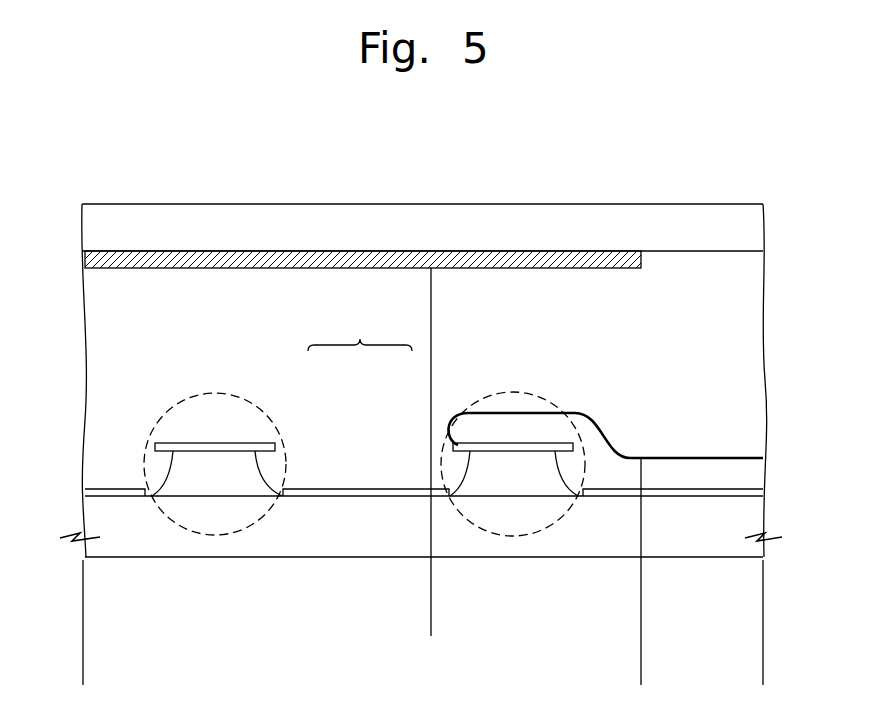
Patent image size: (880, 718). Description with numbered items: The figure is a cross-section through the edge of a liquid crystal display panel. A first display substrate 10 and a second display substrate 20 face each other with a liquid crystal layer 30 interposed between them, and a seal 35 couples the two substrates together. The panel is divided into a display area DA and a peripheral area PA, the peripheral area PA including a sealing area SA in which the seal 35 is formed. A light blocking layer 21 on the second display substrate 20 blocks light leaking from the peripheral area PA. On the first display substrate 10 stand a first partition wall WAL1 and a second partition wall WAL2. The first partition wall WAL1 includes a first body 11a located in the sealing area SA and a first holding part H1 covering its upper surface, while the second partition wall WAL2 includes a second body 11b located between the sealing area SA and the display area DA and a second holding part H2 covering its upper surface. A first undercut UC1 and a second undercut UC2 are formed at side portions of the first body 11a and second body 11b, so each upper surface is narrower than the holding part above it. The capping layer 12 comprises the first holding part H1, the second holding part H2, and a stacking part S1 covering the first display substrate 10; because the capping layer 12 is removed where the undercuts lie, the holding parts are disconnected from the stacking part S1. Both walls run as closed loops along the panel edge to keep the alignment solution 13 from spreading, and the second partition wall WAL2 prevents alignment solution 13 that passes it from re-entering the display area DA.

The first display substrate 10 is at (748, 520).
The first body 11a is at (220, 487).
The second body 11b is at (522, 487).
The capping layer 12 is at (360, 334).
The alignment solution 13 is at (752, 471).
The second display substrate 20 is at (752, 230).
The light blocking layer 21 is at (520, 255).
The liquid crystal layer 30 is at (752, 360).
The seal 35 is at (95, 383).
The first holding part H1 is at (250, 445).
The stacking part S1 is at (382, 490).
The second holding part H2 is at (460, 414).
The first undercut UC1 is at (160, 469).
The second undercut UC2 is at (572, 470).
The first partition wall WAL1 is at (193, 530).
The second partition wall WAL2 is at (490, 530).
The sealing area SA is at (430, 631).
The peripheral area PA is at (640, 678).
The display area DA is at (762, 678).